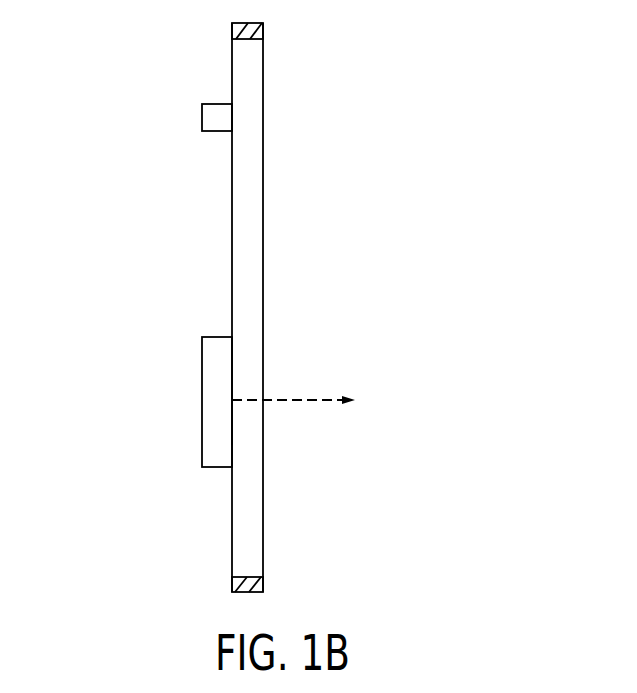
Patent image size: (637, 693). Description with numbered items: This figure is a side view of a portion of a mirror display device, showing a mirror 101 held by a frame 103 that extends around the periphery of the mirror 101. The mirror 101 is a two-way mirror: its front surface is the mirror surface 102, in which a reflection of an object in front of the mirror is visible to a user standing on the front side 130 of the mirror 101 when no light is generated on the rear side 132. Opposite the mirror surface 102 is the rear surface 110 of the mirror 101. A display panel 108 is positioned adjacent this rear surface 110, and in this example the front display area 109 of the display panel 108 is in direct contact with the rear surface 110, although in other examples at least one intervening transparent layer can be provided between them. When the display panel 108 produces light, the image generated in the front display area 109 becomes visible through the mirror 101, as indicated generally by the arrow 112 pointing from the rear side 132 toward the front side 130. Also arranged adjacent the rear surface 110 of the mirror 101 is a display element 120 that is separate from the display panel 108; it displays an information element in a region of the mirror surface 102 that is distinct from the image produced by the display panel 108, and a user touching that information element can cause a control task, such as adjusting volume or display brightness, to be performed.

The mirror 101 is at (246, 308).
The mirror surface 102 is at (263, 240).
The frame 103 is at (263, 38).
The display panel 108 is at (214, 467).
The front display area 109 is at (232, 433).
The rear surface 110 is at (232, 240).
The arrow 112 is at (298, 400).
The display element 120 is at (214, 131).
The front side 130 is at (463, 69).
The rear side 132 is at (147, 68).